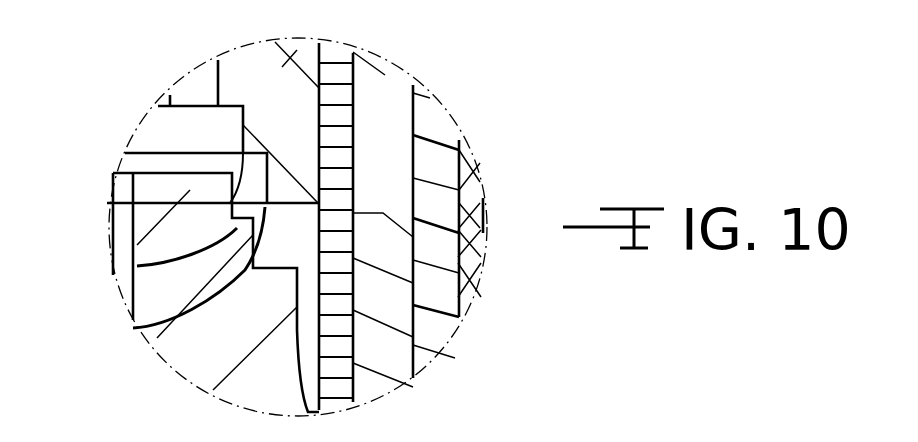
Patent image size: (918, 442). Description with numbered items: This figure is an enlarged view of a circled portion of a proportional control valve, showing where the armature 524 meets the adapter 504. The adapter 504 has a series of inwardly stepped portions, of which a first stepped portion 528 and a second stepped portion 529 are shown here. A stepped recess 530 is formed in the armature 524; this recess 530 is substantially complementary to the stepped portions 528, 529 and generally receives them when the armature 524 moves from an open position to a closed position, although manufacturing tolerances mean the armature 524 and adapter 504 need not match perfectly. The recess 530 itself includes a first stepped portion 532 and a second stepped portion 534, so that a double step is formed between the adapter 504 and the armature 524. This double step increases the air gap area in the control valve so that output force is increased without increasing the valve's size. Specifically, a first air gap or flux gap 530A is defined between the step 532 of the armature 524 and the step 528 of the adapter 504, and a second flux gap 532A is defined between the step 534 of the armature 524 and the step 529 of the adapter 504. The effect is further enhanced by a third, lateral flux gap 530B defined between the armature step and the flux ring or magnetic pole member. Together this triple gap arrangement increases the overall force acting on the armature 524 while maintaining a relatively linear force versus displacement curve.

The adapter 504 is at (225, 337).
The armature 524 is at (277, 128).
The first stepped portion 528 is at (212, 180).
The second stepped portion 529 is at (137, 266).
The stepped recess 530 is at (287, 185).
The first flux gap 530A is at (128, 203).
The third flux gap 530B is at (337, 260).
The first stepped portion of the recess 532 is at (263, 143).
The second flux gap 532A is at (133, 328).
The second stepped portion of the recess 534 is at (330, 165).